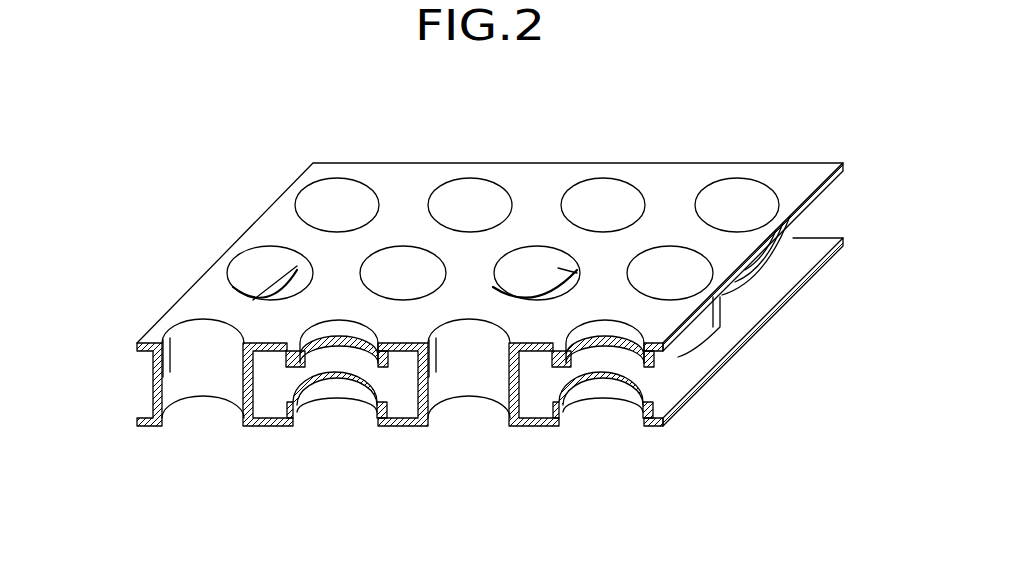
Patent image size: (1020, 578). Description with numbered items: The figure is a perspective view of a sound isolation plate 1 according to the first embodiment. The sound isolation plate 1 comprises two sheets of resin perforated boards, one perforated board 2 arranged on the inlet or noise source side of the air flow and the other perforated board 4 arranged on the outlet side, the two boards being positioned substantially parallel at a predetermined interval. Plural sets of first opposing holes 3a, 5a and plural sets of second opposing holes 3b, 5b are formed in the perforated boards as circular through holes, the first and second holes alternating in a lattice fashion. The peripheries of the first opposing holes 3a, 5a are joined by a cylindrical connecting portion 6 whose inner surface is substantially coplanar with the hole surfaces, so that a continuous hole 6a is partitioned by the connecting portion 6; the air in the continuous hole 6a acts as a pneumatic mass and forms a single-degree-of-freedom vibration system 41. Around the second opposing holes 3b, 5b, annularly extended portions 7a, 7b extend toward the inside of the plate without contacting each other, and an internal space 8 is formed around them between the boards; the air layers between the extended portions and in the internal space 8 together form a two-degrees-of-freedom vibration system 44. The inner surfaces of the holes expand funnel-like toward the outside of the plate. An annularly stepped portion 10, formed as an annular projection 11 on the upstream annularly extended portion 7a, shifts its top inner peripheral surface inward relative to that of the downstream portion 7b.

The sound isolation plate 1 is at (695, 133).
The perforated board 2 is at (810, 168).
The first hole 3a is at (341, 180).
The second hole 3b is at (479, 180).
The perforated board 4 is at (805, 282).
The first hole 5a is at (163, 426).
The second hole 5b is at (292, 418).
The cylindrical connecting portion 6 is at (145, 398).
The continuous hole 6a is at (150, 364).
The annularly extended portion 7a is at (270, 356).
The annularly extended portion 7b is at (290, 412).
The internal space 8 is at (398, 428).
The annularly stepped portion 10 is at (313, 372).
The annular projection 11 is at (305, 342).
The single-degree-of-freedom vibration system 41 is at (205, 400).
The two-degrees-of-freedom vibration system 44 is at (340, 402).